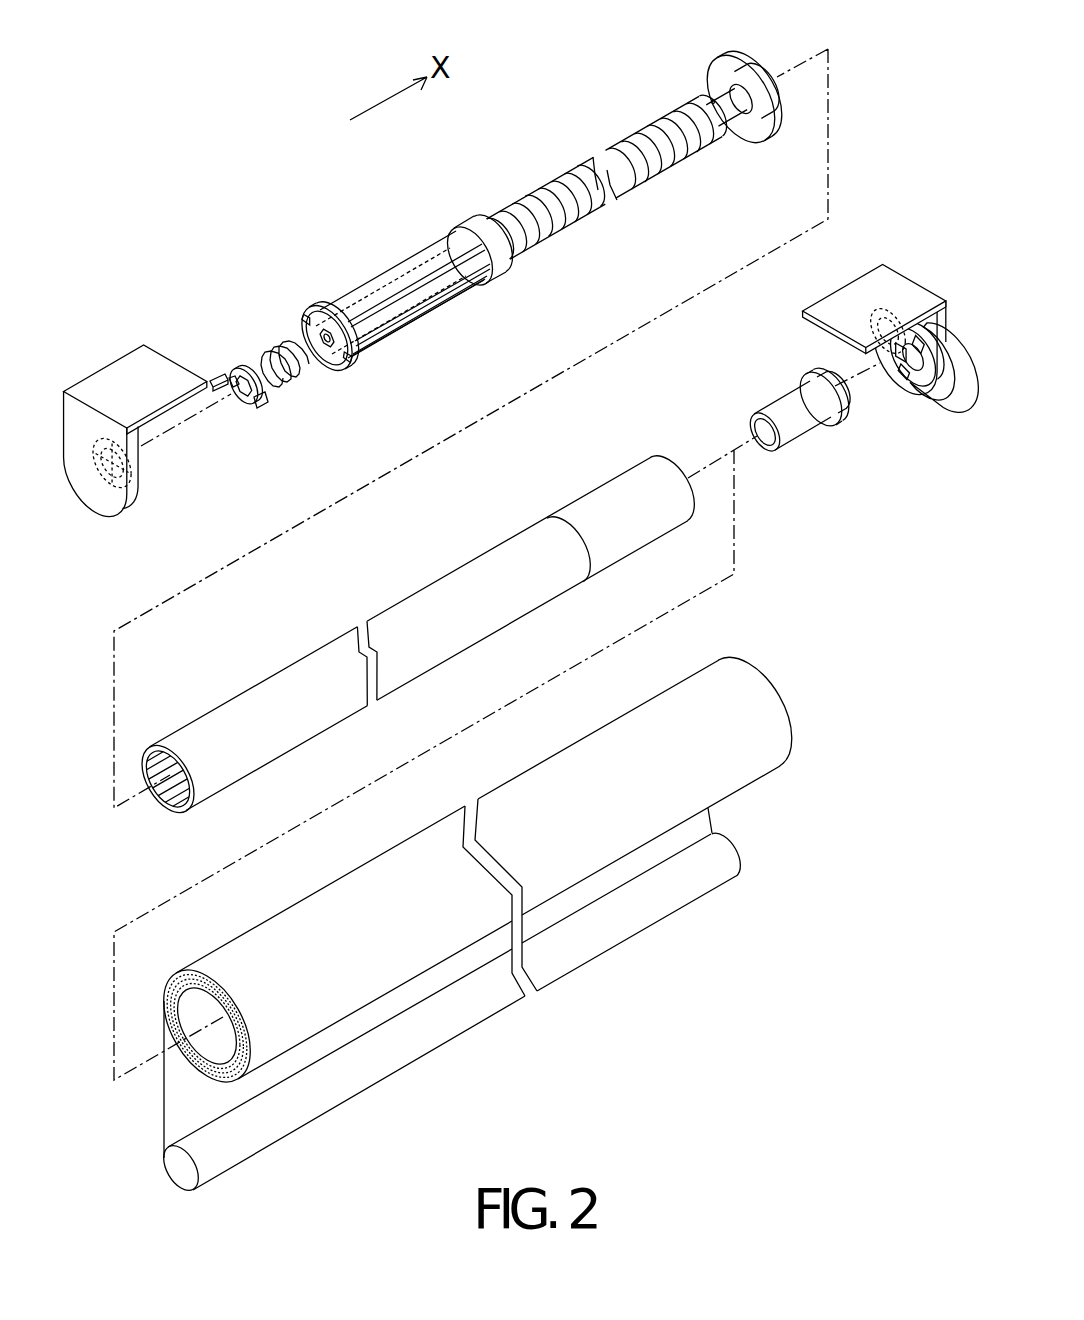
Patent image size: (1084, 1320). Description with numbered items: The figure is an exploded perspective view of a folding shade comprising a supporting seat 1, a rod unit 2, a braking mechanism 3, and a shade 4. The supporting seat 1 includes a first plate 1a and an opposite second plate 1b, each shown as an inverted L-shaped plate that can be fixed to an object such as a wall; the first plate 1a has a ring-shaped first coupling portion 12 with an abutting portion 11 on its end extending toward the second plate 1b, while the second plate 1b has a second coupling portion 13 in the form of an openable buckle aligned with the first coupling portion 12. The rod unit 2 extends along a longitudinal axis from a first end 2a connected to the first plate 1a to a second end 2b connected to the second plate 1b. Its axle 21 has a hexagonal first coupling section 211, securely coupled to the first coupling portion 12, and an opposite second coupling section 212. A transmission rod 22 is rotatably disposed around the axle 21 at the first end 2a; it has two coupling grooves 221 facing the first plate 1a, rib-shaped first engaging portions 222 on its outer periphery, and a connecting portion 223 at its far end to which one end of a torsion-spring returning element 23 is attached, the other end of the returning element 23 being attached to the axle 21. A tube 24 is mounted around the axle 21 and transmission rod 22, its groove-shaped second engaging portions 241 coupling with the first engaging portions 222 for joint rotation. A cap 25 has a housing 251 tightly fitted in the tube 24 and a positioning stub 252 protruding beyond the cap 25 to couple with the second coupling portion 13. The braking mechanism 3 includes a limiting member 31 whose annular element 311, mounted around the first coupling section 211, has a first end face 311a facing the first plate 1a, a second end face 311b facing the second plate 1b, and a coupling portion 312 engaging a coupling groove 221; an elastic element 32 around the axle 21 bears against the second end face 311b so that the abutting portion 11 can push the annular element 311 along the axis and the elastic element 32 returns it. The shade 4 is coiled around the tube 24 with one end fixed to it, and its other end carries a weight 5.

The supporting seat 1 is at (510, 370).
The first plate 1a is at (124, 414).
The second plate 1b is at (863, 293).
The abutting portion 11 is at (133, 462).
The first coupling portion 12 is at (107, 475).
The second coupling portion 13 is at (896, 380).
The rod unit 2 is at (503, 449).
The first end 2a is at (321, 302).
The second end 2b is at (713, 106).
The axle 21 is at (701, 127).
The first coupling section 211 is at (327, 338).
The second coupling section 212 is at (727, 110).
The transmission rod 22 is at (386, 289).
The coupling groove 221 is at (335, 298).
The first engaging portion 222 is at (470, 290).
The connecting portion 223 is at (467, 226).
The returning element 23 is at (633, 140).
The tube 24 is at (397, 671).
The second engaging portion 241 is at (162, 808).
The cap 25 is at (828, 488).
The housing 251 is at (787, 443).
The positioning stub 252 is at (833, 403).
The braking mechanism 3 is at (220, 339).
The limiting member 31 is at (220, 377).
The annular element 311 is at (263, 391).
The first end face 311a is at (240, 408).
The second end face 311b is at (267, 392).
The coupling portion 312 is at (218, 359).
The elastic element 32 is at (268, 345).
The shade 4 is at (763, 727).
The weight 5 is at (633, 917).